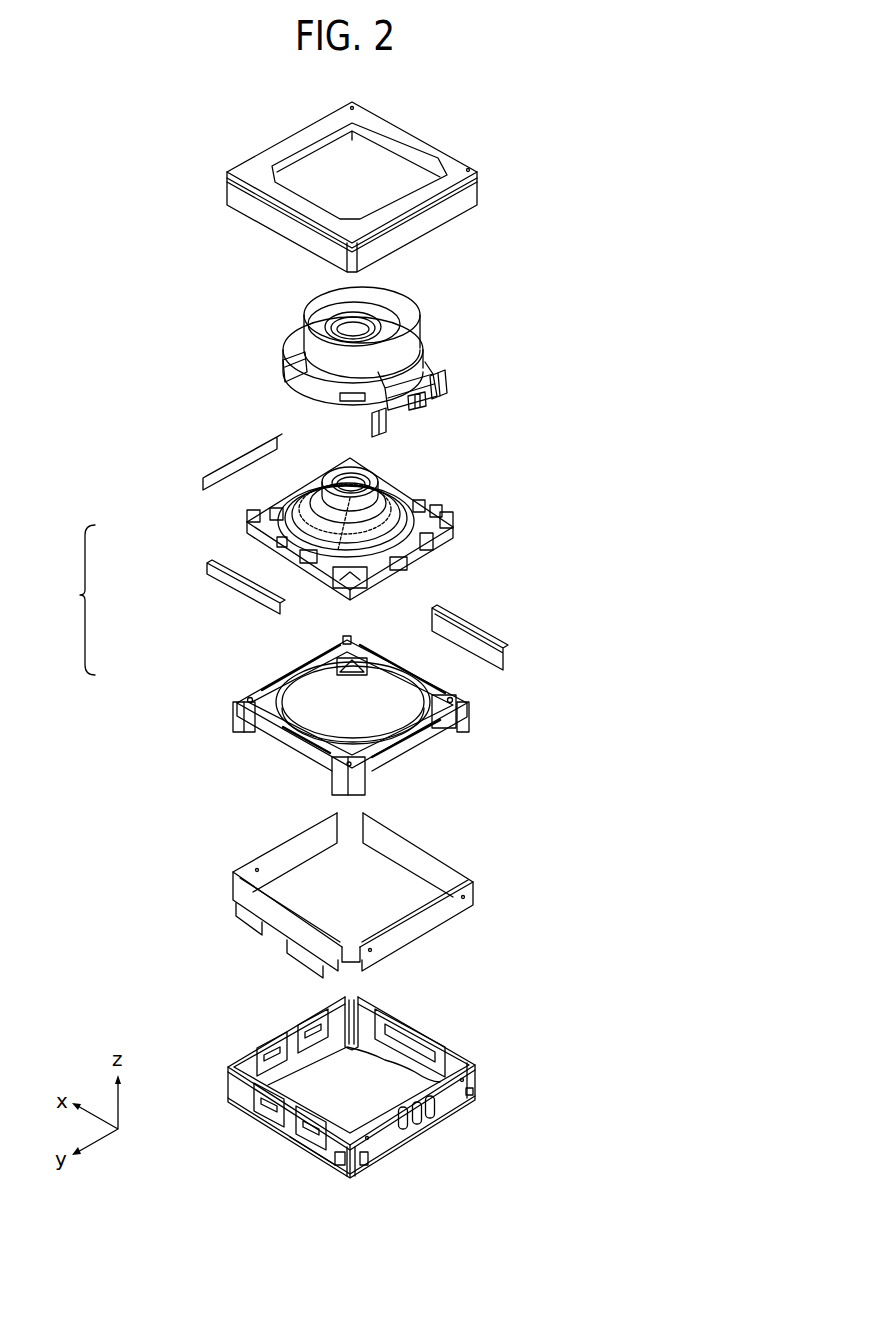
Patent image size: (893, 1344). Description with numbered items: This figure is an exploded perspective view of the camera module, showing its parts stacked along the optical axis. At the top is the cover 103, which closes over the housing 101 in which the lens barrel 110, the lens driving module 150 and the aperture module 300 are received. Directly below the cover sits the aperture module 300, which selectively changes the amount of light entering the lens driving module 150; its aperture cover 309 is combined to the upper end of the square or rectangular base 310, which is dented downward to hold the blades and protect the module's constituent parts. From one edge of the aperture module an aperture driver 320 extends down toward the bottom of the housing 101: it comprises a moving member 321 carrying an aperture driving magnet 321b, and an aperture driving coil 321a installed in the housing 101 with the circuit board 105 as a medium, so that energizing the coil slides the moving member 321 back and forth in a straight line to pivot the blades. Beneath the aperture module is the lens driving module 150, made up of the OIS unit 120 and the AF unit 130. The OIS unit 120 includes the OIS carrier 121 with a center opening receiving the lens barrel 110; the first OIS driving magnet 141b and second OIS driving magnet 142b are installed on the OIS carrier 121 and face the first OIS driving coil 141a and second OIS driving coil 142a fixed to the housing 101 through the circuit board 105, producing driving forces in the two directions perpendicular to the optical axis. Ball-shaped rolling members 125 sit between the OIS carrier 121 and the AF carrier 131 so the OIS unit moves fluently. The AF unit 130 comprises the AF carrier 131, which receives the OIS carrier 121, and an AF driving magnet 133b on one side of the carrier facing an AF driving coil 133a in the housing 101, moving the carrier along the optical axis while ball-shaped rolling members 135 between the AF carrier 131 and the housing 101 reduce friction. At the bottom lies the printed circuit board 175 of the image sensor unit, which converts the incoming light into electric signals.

The cover 103 is at (470, 192).
The aperture module 300 is at (362, 345).
The aperture cover 309 is at (402, 313).
The base 310 is at (283, 365).
The moving member 321 is at (440, 383).
The aperture driving magnet 321b is at (427, 400).
The aperture driver 320 is at (428, 419).
The second OIS driving magnet 142b is at (245, 468).
The first OIS driving magnet 141b is at (276, 603).
The AF driving magnet 133b is at (473, 623).
The OIS unit 120 is at (308, 527).
The lens barrel 110 is at (387, 482).
The OIS carrier 121 is at (453, 519).
The rolling members 125 is at (355, 655).
The AF unit 130 is at (285, 690).
The AF carrier 131 is at (425, 755).
The lens driving module 150 is at (69, 600).
The circuit board 105 is at (447, 918).
The housing 101 is at (366, 1078).
The rolling members 135 is at (367, 1003).
The second OIS driving coil 142a is at (267, 1040).
The AF driving coil 133a is at (423, 1050).
The first OIS driving coil 141a is at (267, 1115).
The aperture driving coil 321a is at (440, 1127).
The printed circuit board 175 is at (313, 1155).